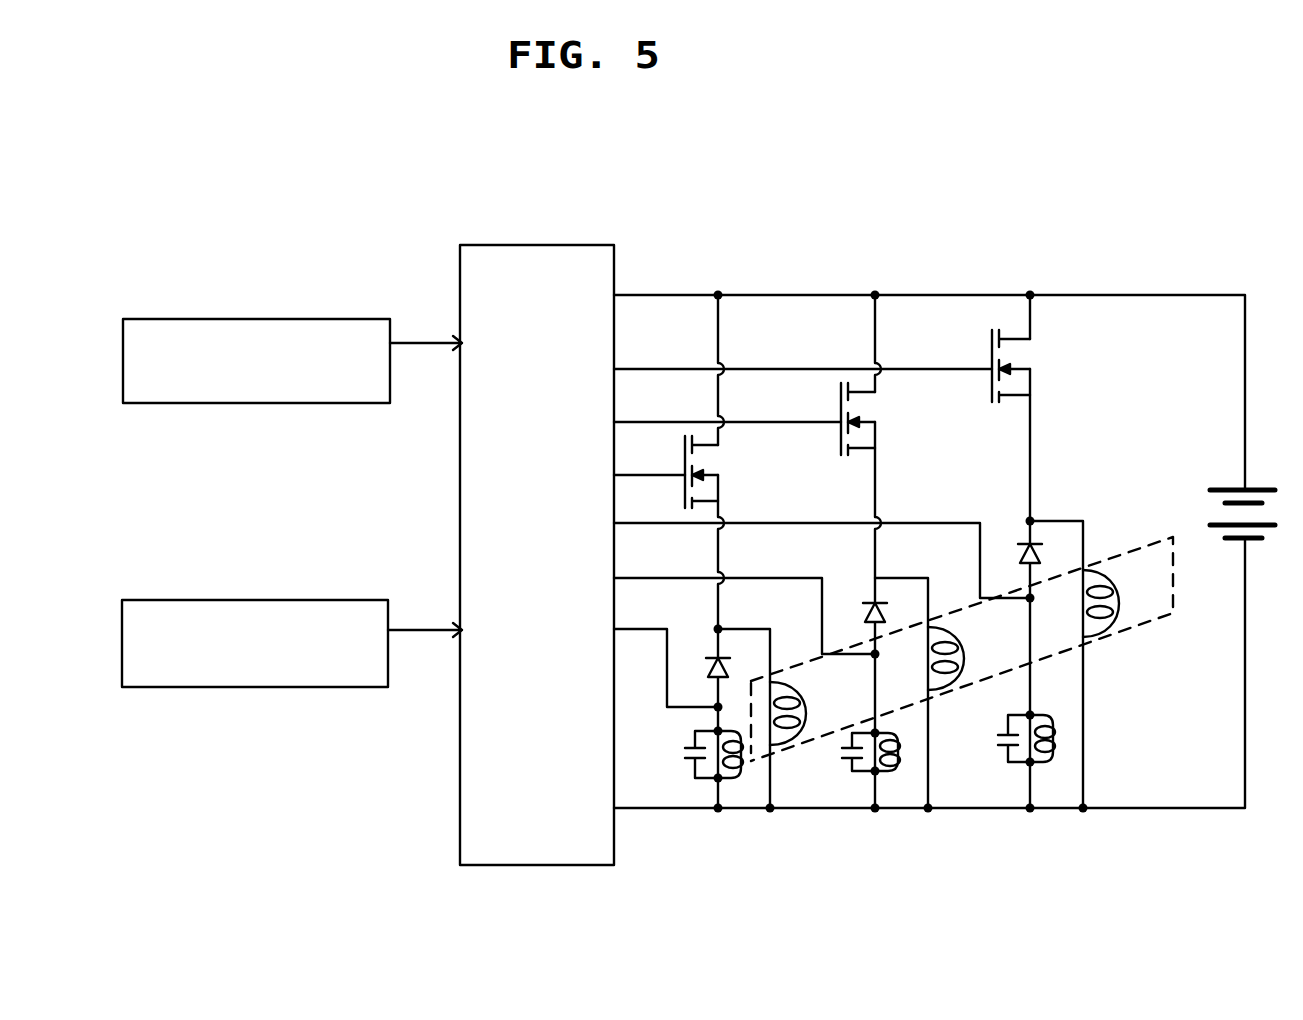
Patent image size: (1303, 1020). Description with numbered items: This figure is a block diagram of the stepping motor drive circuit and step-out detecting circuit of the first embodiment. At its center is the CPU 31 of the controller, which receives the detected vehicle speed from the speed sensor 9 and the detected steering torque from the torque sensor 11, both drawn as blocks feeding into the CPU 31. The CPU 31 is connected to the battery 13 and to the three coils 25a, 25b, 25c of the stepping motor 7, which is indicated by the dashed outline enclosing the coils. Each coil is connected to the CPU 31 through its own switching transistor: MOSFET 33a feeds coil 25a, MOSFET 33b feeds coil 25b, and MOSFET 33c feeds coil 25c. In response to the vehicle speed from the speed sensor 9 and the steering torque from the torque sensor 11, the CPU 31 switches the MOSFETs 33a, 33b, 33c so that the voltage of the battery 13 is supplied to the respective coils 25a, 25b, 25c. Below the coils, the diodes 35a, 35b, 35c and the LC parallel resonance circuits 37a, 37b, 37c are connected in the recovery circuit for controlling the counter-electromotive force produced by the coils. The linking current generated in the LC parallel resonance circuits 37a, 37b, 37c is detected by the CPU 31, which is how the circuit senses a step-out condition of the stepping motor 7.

The stepping motor 7 is at (1095, 563).
The speed sensor 9 is at (310, 318).
The torque sensor 11 is at (300, 600).
The battery 13 is at (1197, 492).
The coil 25a is at (816, 728).
The coil 25b is at (973, 672).
The coil 25c is at (1126, 612).
The CPU 31 is at (522, 273).
The MOSFET 33a is at (728, 487).
The MOSFET 33b is at (893, 435).
The MOSFET 33c is at (1048, 383).
The diode 35a is at (699, 653).
The diode 35b is at (851, 601).
The diode 35c is at (1004, 534).
The LC parallel resonance circuit 37a is at (704, 772).
The LC parallel resonance circuit 37b is at (862, 772).
The LC parallel resonance circuit 37c is at (1017, 762).